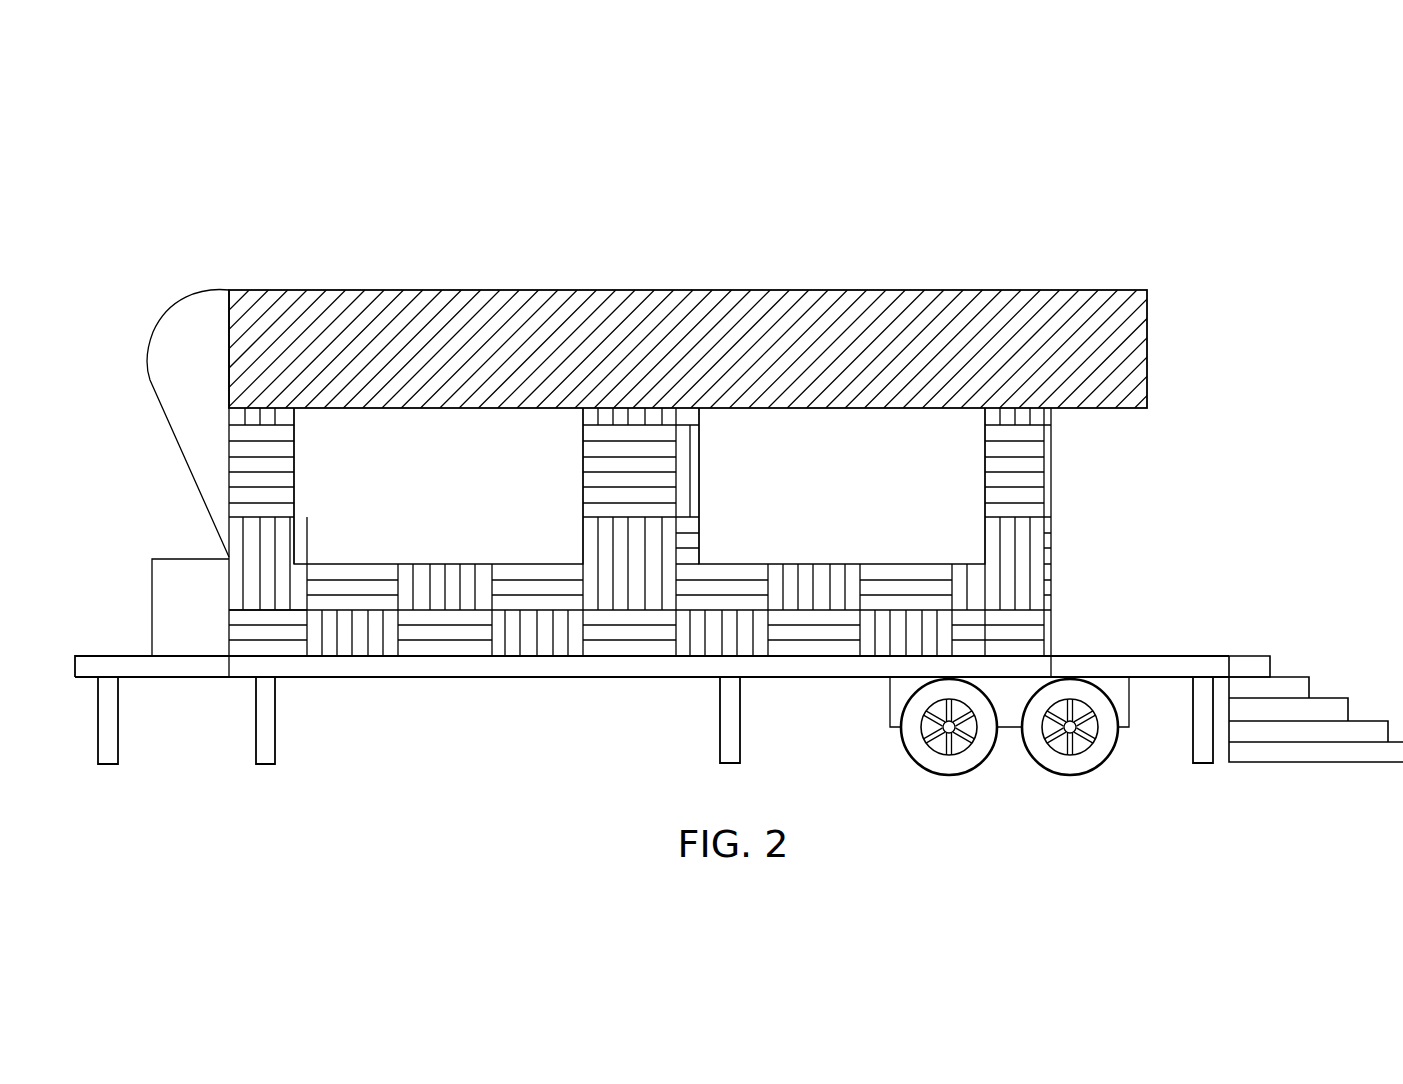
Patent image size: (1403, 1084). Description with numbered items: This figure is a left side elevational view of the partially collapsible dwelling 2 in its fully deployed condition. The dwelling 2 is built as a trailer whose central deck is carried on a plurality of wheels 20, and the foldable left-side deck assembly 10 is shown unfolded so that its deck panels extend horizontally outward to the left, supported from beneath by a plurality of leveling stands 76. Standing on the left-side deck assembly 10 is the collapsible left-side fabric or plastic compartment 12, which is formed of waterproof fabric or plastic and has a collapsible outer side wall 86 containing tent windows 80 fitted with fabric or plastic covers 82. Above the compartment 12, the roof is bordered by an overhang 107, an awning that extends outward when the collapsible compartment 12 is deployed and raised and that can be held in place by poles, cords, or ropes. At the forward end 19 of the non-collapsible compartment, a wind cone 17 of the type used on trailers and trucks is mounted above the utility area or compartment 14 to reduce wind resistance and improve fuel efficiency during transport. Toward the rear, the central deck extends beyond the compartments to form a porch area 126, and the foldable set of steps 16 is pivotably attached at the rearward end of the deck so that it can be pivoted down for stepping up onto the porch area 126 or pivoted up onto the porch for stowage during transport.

The partially collapsible dwelling 2 is at (1053, 204).
The overhang 107 is at (1139, 362).
The wind cone 17 is at (200, 289).
The forward end 19 is at (237, 479).
The utility area and/or compartment 14 is at (207, 624).
The tent window 80 is at (639, 401).
The fabric or plastic cover 82 is at (441, 423).
The collapsible outer side wall 86 is at (594, 464).
The collapsible left-side fabric or plastic compartment 12 is at (1020, 565).
The foldable left-side deck assembly 10 is at (550, 677).
The leveling stand 76 is at (256, 718).
The wheel 20 is at (949, 775).
The porch area 126 is at (1202, 656).
The foldable set of steps 16 is at (1283, 677).